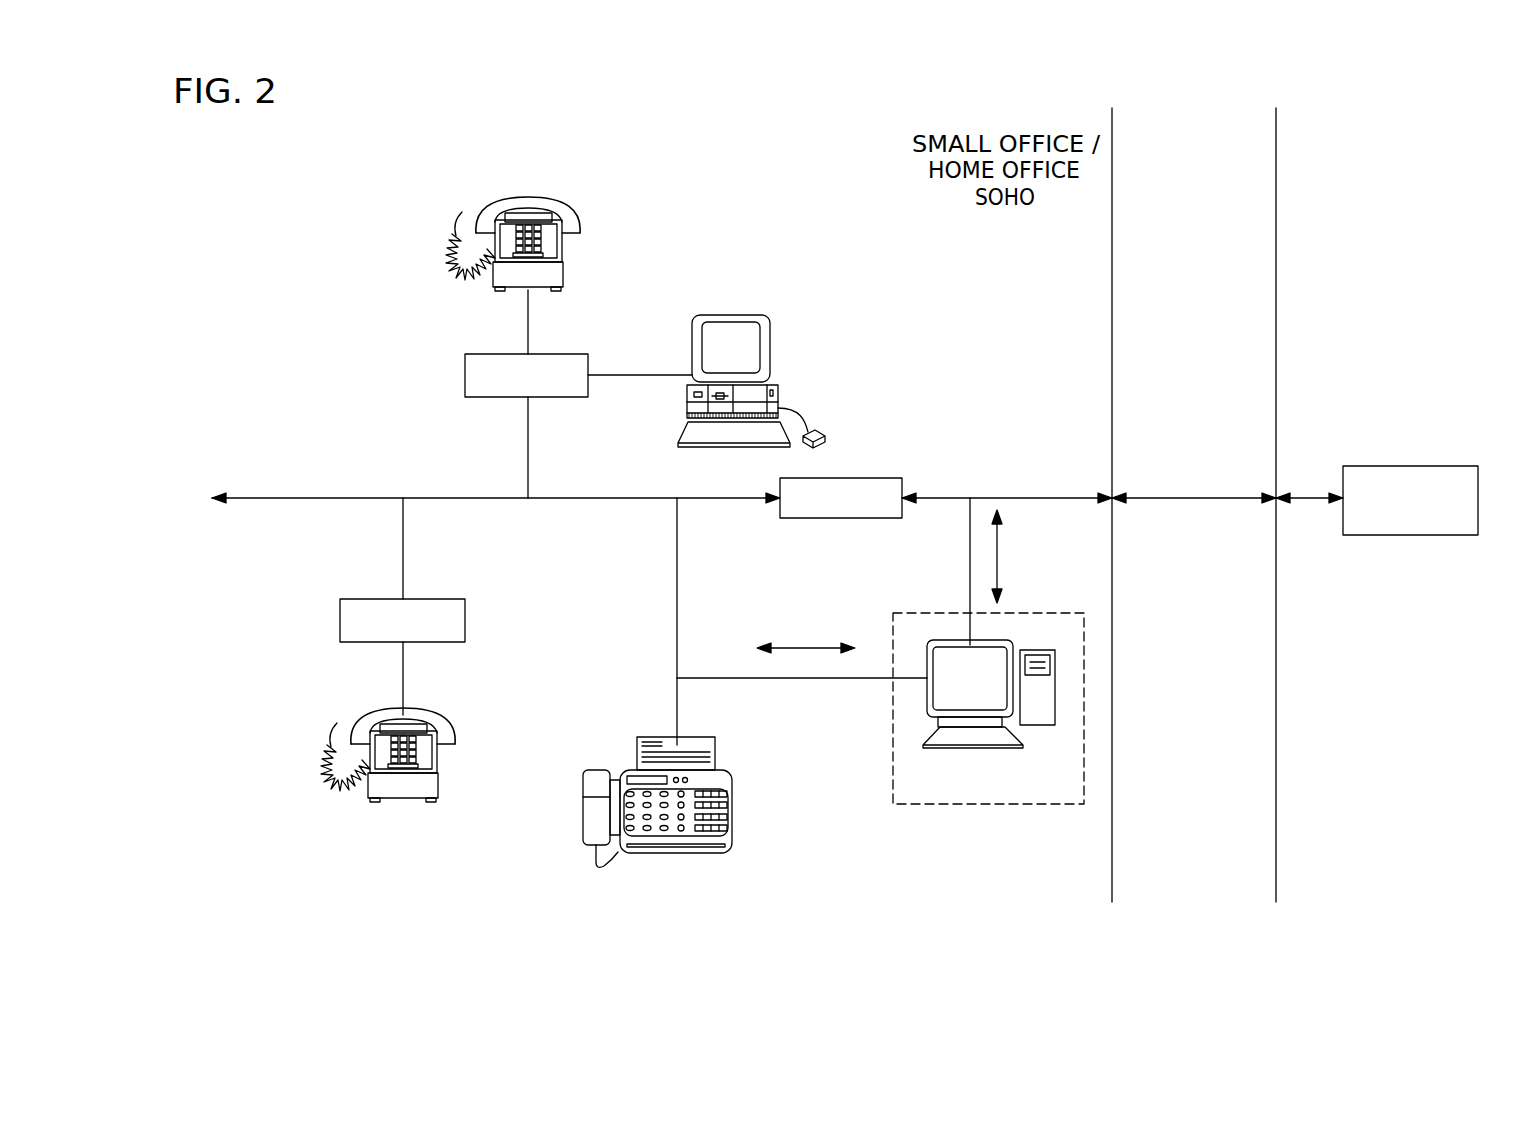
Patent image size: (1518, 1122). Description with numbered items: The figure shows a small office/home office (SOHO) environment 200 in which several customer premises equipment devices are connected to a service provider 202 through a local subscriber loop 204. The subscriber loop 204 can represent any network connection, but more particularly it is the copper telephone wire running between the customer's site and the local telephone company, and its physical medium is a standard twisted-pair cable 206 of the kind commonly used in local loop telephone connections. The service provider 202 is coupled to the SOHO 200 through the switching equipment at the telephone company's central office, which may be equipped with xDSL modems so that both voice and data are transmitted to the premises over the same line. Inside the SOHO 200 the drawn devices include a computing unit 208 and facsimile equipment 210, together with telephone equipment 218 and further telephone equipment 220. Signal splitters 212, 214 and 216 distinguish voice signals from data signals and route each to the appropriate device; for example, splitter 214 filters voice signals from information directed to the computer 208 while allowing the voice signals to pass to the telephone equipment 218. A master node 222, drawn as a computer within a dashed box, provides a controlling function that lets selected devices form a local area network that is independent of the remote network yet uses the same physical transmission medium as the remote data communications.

The small office/home office (SOHO) environment 200 is at (733, 287).
The service provider 202 is at (1407, 463).
The local subscriber loop 204 is at (1215, 273).
The twisted-pair cable 206 is at (1180, 498).
The computing unit 208 is at (770, 353).
The facsimile equipment 210 is at (732, 803).
The signal splitter 212 is at (857, 478).
The signal splitter 214 is at (560, 397).
The signal splitter 216 is at (465, 620).
The telephone equipment 218 is at (562, 261).
The telephone equipment 220 is at (437, 772).
The master node 222 is at (1002, 805).